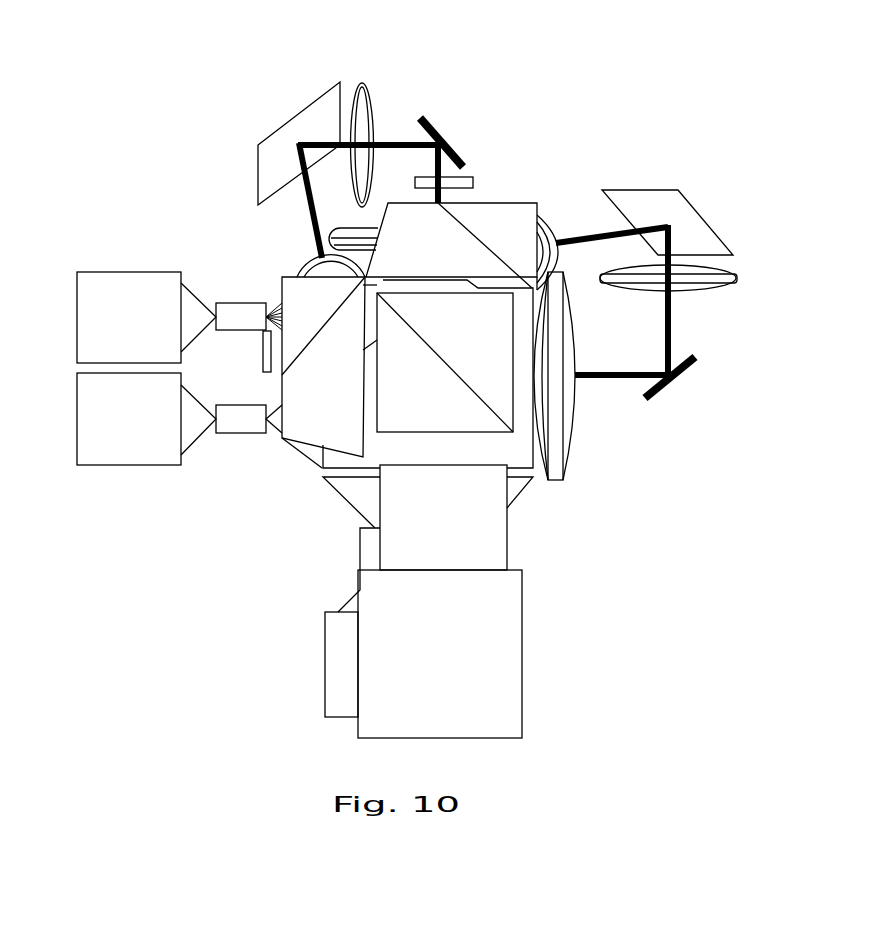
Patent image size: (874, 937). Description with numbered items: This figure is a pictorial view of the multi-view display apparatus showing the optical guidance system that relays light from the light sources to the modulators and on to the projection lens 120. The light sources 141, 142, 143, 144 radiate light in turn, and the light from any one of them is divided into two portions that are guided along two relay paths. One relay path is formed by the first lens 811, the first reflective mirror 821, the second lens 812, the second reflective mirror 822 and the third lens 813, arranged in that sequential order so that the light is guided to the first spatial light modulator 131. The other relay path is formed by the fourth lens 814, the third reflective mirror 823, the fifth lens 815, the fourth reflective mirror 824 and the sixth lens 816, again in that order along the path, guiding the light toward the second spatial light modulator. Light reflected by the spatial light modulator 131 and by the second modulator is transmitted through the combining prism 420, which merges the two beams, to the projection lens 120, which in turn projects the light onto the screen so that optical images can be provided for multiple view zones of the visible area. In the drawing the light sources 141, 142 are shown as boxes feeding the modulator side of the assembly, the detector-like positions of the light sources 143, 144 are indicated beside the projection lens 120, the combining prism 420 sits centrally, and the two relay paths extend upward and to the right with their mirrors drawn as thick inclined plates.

The projection lens 120 is at (522, 663).
The first spatial light modulator 131 is at (257, 357).
The light source 141 is at (110, 331).
The light source 142 is at (110, 432).
The light source 143 is at (257, 664).
The light source 144 is at (312, 663).
The combining prism 420 is at (518, 402).
The first lens 811 is at (337, 238).
The second lens 812 is at (362, 83).
The third lens 813 is at (310, 263).
The fourth lens 814 is at (557, 480).
The fifth lens 815 is at (737, 278).
The sixth lens 816 is at (552, 217).
The first reflective mirror 821 is at (433, 120).
The second reflective mirror 822 is at (308, 115).
The third reflective mirror 823 is at (683, 377).
The fourth reflective mirror 824 is at (702, 227).